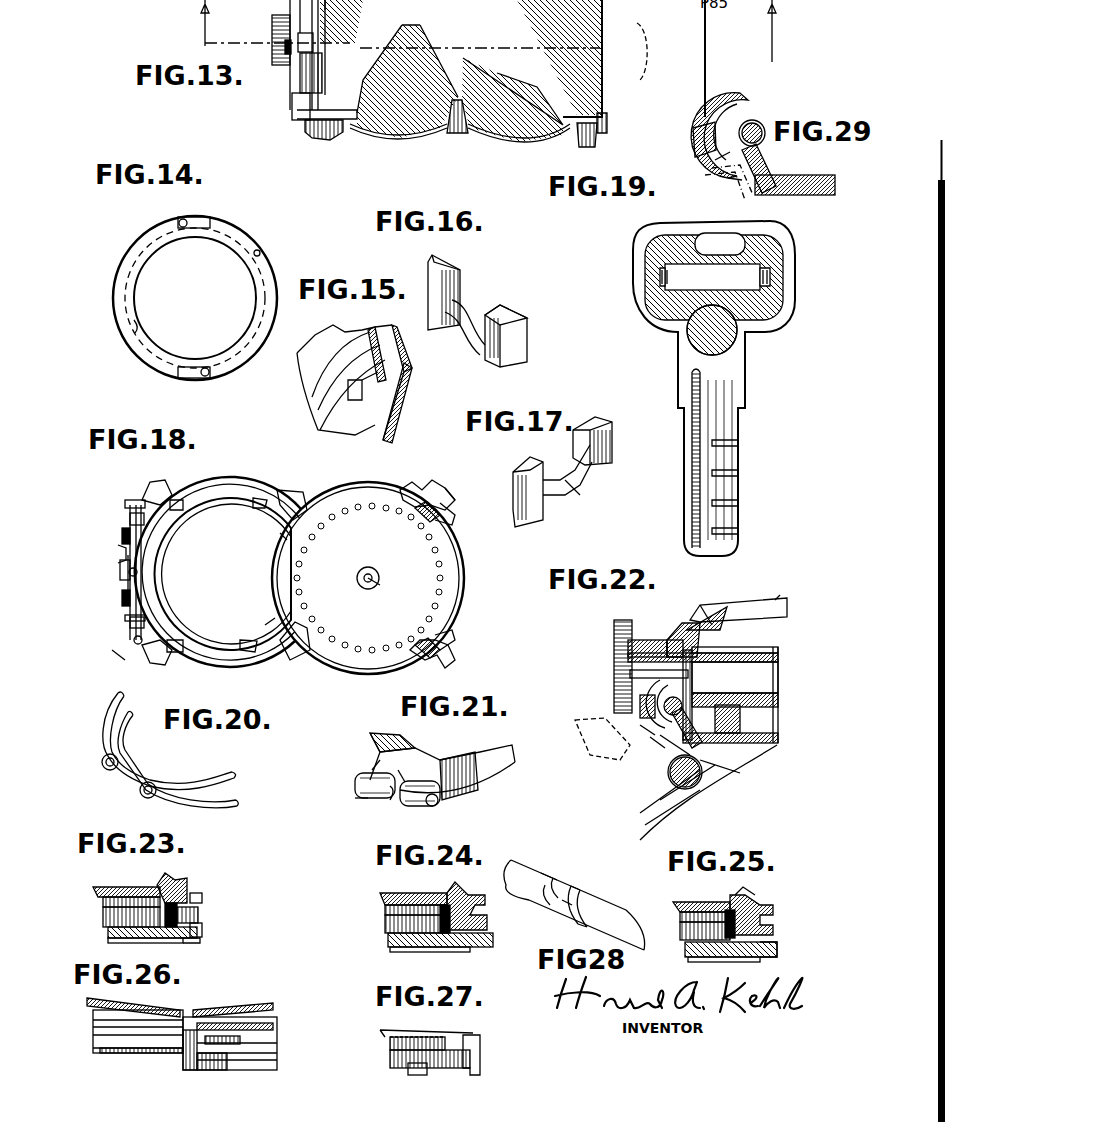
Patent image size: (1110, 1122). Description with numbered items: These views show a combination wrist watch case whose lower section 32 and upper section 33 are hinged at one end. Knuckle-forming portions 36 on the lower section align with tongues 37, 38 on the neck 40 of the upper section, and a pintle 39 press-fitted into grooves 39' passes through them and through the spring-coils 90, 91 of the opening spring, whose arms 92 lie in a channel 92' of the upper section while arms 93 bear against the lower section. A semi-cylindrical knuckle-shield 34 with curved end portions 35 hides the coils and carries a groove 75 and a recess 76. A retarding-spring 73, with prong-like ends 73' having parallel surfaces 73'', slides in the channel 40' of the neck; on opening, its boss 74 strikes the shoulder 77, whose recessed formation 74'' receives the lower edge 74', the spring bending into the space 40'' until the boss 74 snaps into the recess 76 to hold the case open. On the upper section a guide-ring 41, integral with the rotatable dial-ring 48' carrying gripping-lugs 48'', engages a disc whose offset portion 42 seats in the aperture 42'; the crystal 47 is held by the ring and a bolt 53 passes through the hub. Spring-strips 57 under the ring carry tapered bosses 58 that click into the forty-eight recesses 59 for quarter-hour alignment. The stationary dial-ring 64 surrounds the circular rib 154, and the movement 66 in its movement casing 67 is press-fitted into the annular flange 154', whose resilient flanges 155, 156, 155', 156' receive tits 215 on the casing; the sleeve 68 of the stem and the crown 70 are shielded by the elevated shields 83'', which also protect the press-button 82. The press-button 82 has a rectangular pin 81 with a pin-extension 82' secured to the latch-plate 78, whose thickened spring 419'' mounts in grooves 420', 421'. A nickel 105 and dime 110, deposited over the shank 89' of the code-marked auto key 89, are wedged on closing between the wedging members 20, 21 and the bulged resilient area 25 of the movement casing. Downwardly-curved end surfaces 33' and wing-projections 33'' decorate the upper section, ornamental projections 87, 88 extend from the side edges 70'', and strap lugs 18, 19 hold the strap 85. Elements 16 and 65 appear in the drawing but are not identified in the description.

In FIG. 13, the housing 16 is at (348, 5).
In FIG. 22, the strap lug 18 is at (710, 760).
In FIG. 13, the strap lug 19 is at (612, 132).
In FIG. 18, the wedging member 20 is at (452, 522).
In FIG. 27, the wedging member 20 is at (480, 1060).
In FIG. 18, the wedging member 21 is at (452, 637).
In FIG. 27, the wedging member 21 is at (413, 1075).
In FIG. 26, the bulged resilient area 25 is at (190, 1067).
In FIG. 13, the lower section 32 is at (403, 113).
In FIG. 29, the lower section 32 is at (658, 168).
In FIG. 15, the lower section 32 is at (400, 425).
In FIG. 21, the lower section 32 is at (502, 787).
In FIG. 22, the lower section 32 is at (773, 740).
In FIG. 23, the lower section 32 is at (153, 938).
In FIG. 24, the lower section 32 is at (455, 948).
In FIG. 25, the lower section 32 is at (700, 960).
In FIG. 13, the upper section 33 is at (382, 154).
In FIG. 15, the upper section 33 is at (343, 415).
In FIG. 23, the upper section 33 is at (111, 884).
In FIG. 24, the upper section 33 is at (397, 902).
In FIG. 27, the upper section 33 is at (446, 1026).
In FIG. 18, the downwardly-curved end surfaces 33' is at (466, 474).
In FIG. 18, the wing-projections 33'' is at (433, 478).
In FIG. 29, the knuckle-shield 34 is at (748, 112).
In FIG. 21, the knuckle-shield 34 is at (368, 798).
In FIG. 22, the knuckle-shield 34 is at (655, 690).
In FIG. 28, the knuckle-shield 34 is at (560, 857).
In FIG. 29, the curved portion 35 is at (746, 108).
In FIG. 21, the curved portion 35 is at (410, 813).
In FIG. 28, the curved portion 35 is at (590, 925).
In FIG. 21, the knuckle-forming portions 36 is at (430, 807).
In FIG. 18, the knuckle-forming tongue 37 is at (130, 513).
In FIG. 13, the knuckle-forming tongue 38 is at (297, 97).
In FIG. 18, the knuckle-forming tongue 38 is at (130, 625).
In FIG. 29, the pintle 39 is at (773, 121).
In FIG. 18, the pintle 39 is at (157, 576).
In FIG. 22, the pintle 39 is at (690, 714).
In FIG. 18, the grooves 39' is at (125, 653).
In FIG. 18, the neck 40 is at (106, 537).
In FIG. 18, the channel 40' is at (101, 595).
In FIG. 16, the space 40'' is at (441, 307).
In FIG. 14, the guide-ring 41 is at (137, 325).
In FIG. 18, the central downwardly-offset circular portion 42 is at (431, 571).
In FIG. 18, the circular aperture 42' is at (437, 585).
In FIG. 15, the crystal 47 is at (330, 380).
In FIG. 14, the dial-ring 48' is at (195, 298).
In FIG. 15, the dial-ring 48' is at (334, 387).
In FIG. 15, the gripping-lugs 48'' is at (409, 384).
In FIG. 18, the bolt 53 is at (375, 583).
In FIG. 14, the spring-strips 57 is at (195, 380).
In FIG. 14, the tapered boss 58 is at (218, 373).
In FIG. 18, the recesses 59 is at (380, 505).
In FIG. 22, the watch dial-ring 64 is at (684, 637).
In FIG. 22, the arm 65 is at (767, 607).
In FIG. 22, the wrist watch movement 66 is at (757, 687).
In FIG. 26, the wrist watch movement 66 is at (108, 1043).
In FIG. 22, the movement casing 67 is at (737, 727).
In FIG. 26, the movement casing 67 is at (127, 1053).
In FIG. 13, the sleeve 68 is at (287, 47).
In FIG. 22, the sleeve 68 is at (670, 640).
In FIG. 22, the crown 70 is at (592, 708).
In FIG. 15, the inwardly-curved lower side walls 70'' is at (371, 416).
In FIG. 13, the retarding-spring 73 is at (290, 74).
In FIG. 16, the retarding-spring 73 is at (462, 343).
In FIG. 17, the retarding-spring 73 is at (535, 499).
In FIG. 18, the retarding-spring 73 is at (104, 570).
In FIG. 16, the prong-like ends 73' is at (493, 360).
In FIG. 17, the prong-like ends 73' is at (626, 444).
In FIG. 18, the prong-like ends 73' is at (93, 553).
In FIG. 16, the parallel surfaces 73'' is at (522, 332).
In FIG. 17, the parallel surfaces 73'' is at (602, 429).
In FIG. 29, the tapered boss 74 is at (705, 163).
In FIG. 17, the tapered boss 74 is at (584, 478).
In FIG. 22, the tapered boss 74 is at (611, 741).
In FIG. 17, the inside lower edge 74' is at (579, 504).
In FIG. 22, the inside lower edge 74' is at (628, 779).
In FIG. 21, the recessed formation 74'' is at (427, 755).
In FIG. 22, the recessed formation 74'' is at (752, 780).
In FIG. 29, the groove 75 is at (728, 160).
In FIG. 21, the groove 75 is at (388, 800).
In FIG. 22, the groove 75 is at (647, 727).
In FIG. 28, the groove 75 is at (565, 910).
In FIG. 13, the recess 76 is at (272, 38).
In FIG. 29, the recess 76 is at (767, 153).
In FIG. 21, the recess 76 is at (367, 770).
In FIG. 22, the recess 76 is at (650, 733).
In FIG. 28, the recess 76 is at (560, 880).
In FIG. 13, the shoulder 77 is at (320, 40).
In FIG. 29, the shoulder 77 is at (742, 177).
In FIG. 21, the shoulder 77 is at (463, 788).
In FIG. 22, the shoulder 77 is at (717, 747).
In FIG. 23, the latch-plate 78 is at (203, 930).
In FIG. 23, the rectangularly-shaped pin 81 is at (197, 917).
In FIG. 23, the press-button 82 is at (219, 897).
In FIG. 24, the press-button 82 is at (485, 906).
In FIG. 25, the press-button 82 is at (729, 924).
In FIG. 23, the pin-extension 82' is at (191, 935).
In FIG. 24, the pin-extension 82' is at (391, 936).
In FIG. 22, the elevated shield 83'' is at (647, 629).
In FIG. 22, the strap 85 is at (640, 813).
In FIG. 13, the ornamental projection 87 is at (467, 133).
In FIG. 18, the ornamental projection 87 is at (305, 652).
In FIG. 18, the ornamental projection 88 is at (297, 500).
In FIG. 19, the auto key 89 is at (711, 388).
In FIG. 22, the auto key 89 is at (757, 695).
In FIG. 23, the auto key 89 is at (132, 939).
In FIG. 19, the shank 89' is at (690, 458).
In FIG. 23, the shank 89' is at (221, 950).
In FIG. 24, the shank 89' is at (464, 936).
In FIG. 25, the shank 89' is at (790, 947).
In FIG. 18, the spring-coil 90 is at (125, 612).
In FIG. 20, the spring-coil 90 is at (100, 758).
In FIG. 18, the spring-coil 91 is at (125, 518).
In FIG. 20, the spring-coil 91 is at (138, 790).
In FIG. 18, the arms 92 is at (104, 677).
In FIG. 20, the arms 92 is at (169, 741).
In FIG. 18, the channel 92' is at (223, 565).
In FIG. 20, the arms 93 is at (220, 807).
In FIG. 23, the nickel 105 is at (107, 918).
In FIG. 26, the nickel 105 is at (223, 1063).
In FIG. 24, the nickel 105 is at (440, 945).
In FIG. 25, the nickel 105 is at (695, 945).
In FIG. 27, the nickel 105 is at (445, 1065).
In FIG. 23, the dime 110 is at (103, 902).
In FIG. 26, the dime 110 is at (267, 1047).
In FIG. 24, the dime 110 is at (388, 910).
In FIG. 25, the dime 110 is at (680, 915).
In FIG. 27, the dime 110 is at (390, 1045).
In FIG. 18, the circular rib 154 is at (238, 623).
In FIG. 22, the circular rib 154 is at (731, 588).
In FIG. 18, the annular flange 154' is at (254, 547).
In FIG. 22, the annular flange 154' is at (703, 643).
In FIG. 26, the annular flange 154' is at (207, 1009).
In FIG. 18, the downwardly projected flange 155 is at (189, 521).
In FIG. 18, the downwardly projected flange 155' is at (176, 626).
In FIG. 18, the downwardly projected flange 156 is at (244, 519).
In FIG. 18, the downwardly projected flange 156' is at (262, 664).
In FIG. 18, the tits 215 is at (168, 652).
In FIG. 23, the thickened spring 419'' is at (198, 888).
In FIG. 18, the groove 420' is at (454, 496).
In FIG. 18, the groove 421' is at (445, 664).